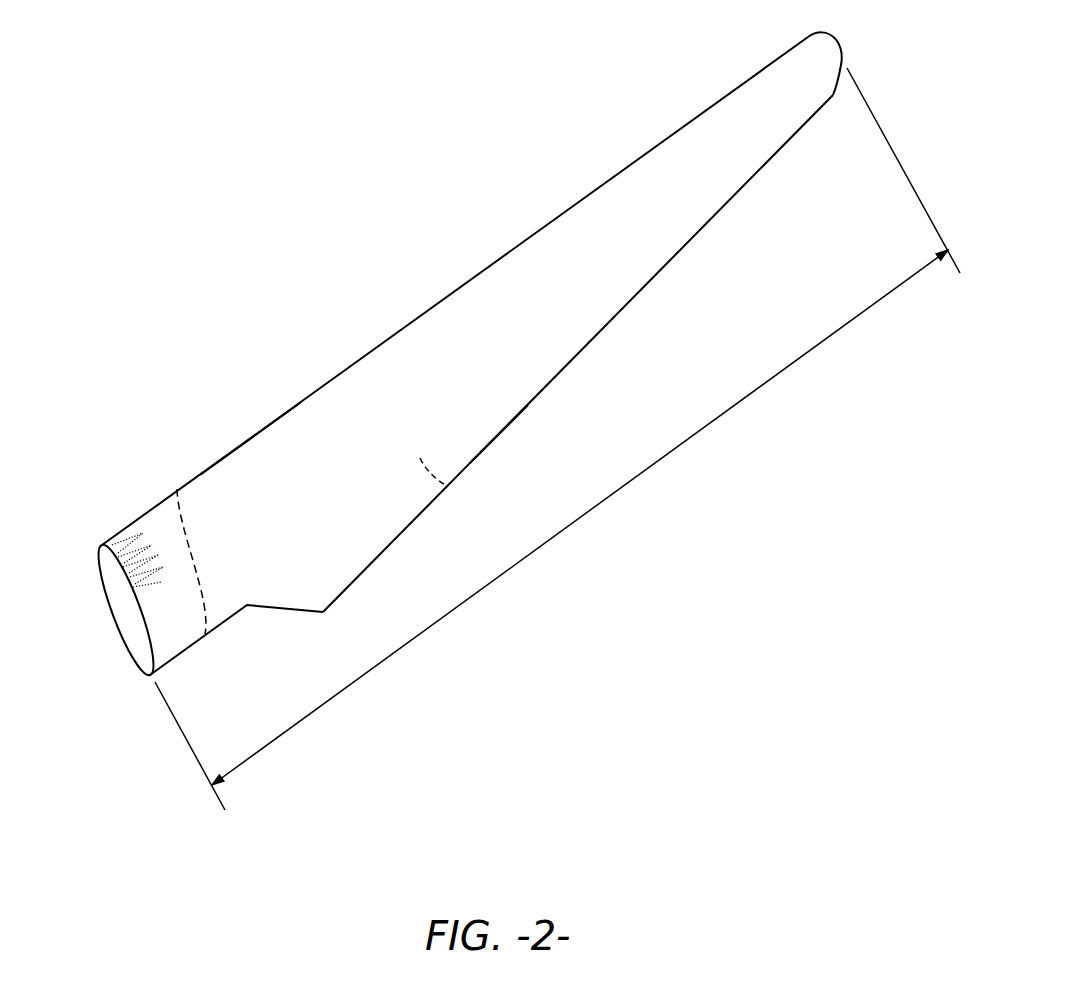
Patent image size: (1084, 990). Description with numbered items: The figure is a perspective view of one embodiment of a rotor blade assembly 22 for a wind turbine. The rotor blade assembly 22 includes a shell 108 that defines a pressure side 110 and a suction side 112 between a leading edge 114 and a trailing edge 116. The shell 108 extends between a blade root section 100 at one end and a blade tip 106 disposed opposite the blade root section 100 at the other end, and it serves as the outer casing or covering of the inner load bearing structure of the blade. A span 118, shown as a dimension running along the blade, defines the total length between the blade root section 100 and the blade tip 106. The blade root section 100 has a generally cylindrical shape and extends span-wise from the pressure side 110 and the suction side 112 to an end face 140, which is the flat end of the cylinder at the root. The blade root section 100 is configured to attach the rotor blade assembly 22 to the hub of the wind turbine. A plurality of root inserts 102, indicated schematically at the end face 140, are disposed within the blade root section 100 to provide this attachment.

The rotor blade assembly 22 is at (418, 163).
The blade root section 100 is at (169, 538).
The root inserts 102 is at (127, 537).
The blade tip 106 is at (838, 44).
The shell 108 is at (372, 535).
The pressure side 110 is at (447, 486).
The suction side 112 is at (348, 425).
The leading edge 114 is at (417, 313).
The trailing edge 116 is at (528, 405).
The span 118 is at (610, 493).
The end face 140 is at (115, 623).